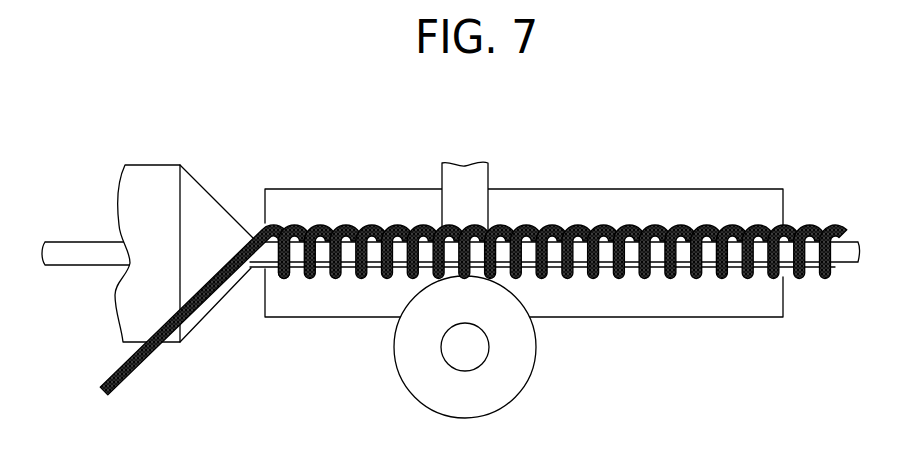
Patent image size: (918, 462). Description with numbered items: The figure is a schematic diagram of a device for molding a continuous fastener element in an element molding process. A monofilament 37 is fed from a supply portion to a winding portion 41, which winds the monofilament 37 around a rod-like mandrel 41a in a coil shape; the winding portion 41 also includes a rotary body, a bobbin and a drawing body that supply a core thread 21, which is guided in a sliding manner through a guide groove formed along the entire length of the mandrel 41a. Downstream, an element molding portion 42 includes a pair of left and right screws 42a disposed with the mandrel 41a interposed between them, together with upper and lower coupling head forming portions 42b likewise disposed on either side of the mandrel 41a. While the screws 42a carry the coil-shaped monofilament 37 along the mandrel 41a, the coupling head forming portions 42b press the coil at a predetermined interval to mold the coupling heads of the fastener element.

The core thread 21 is at (82, 253).
The winding portion 41 is at (223, 205).
The mandrel 41a is at (253, 272).
The monofilament 37 is at (125, 383).
The element molding portion 42 is at (556, 279).
The screws 42a is at (637, 302).
The coupling head forming portions 42b is at (498, 382).